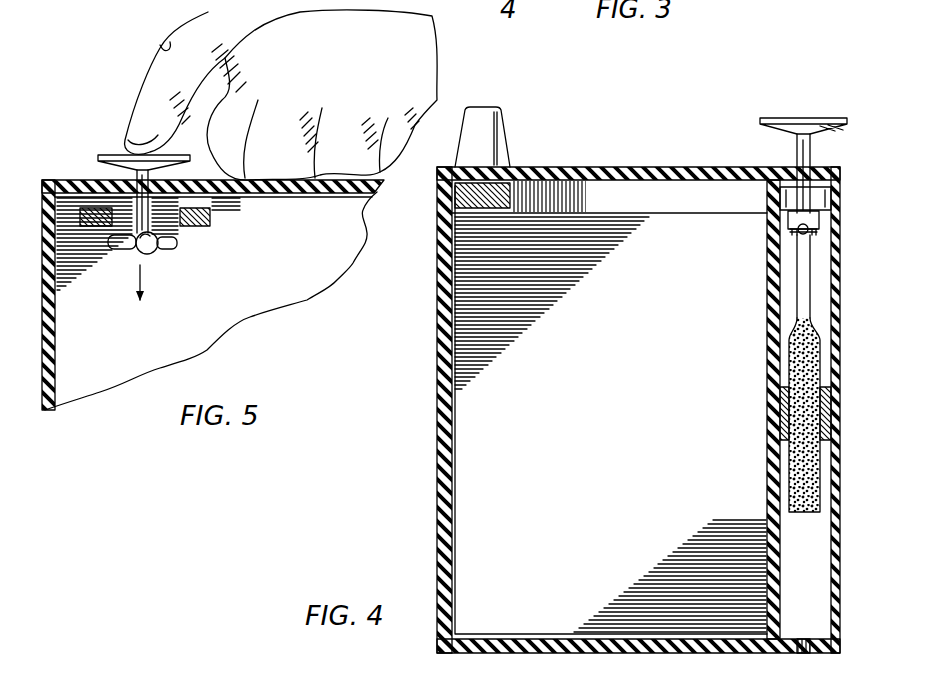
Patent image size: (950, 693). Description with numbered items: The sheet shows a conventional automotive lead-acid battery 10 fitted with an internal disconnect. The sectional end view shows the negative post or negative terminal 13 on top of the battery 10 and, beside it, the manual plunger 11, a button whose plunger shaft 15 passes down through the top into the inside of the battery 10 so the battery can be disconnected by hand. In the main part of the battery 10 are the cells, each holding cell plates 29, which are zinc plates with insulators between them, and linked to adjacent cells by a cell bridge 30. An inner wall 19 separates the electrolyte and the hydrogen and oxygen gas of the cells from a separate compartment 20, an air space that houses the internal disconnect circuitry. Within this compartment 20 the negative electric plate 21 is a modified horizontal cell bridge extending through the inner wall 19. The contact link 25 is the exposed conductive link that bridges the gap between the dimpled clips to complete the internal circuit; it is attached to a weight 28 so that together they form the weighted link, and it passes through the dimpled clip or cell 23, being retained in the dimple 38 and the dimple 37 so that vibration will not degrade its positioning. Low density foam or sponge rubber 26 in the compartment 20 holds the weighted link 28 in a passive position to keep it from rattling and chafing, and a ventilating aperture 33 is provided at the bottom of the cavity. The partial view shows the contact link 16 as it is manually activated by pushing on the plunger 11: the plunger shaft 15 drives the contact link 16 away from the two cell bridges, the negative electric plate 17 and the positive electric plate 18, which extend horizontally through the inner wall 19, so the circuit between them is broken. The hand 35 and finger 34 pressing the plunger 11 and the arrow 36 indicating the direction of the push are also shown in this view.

In FIG. 4, the battery 10 is at (816, 82).
In FIG. 4, the manual plunger 11 is at (766, 116).
In FIG. 5, the manual plunger 11 is at (108, 148).
In FIG. 4, the negative terminal 13 is at (500, 118).
In FIG. 4, the plunger shaft 15 is at (800, 150).
In FIG. 5, the plunger shaft 15 is at (128, 165).
In FIG. 5, the contact link 16 is at (172, 252).
In FIG. 5, the negative electric plate 17 is at (90, 226).
In FIG. 5, the positive electric plate 18 is at (210, 228).
In FIG. 4, the inner wall 19 is at (762, 505).
In FIG. 4, the compartment 20 is at (800, 546).
In FIG. 5, the compartment 20 is at (265, 295).
In FIG. 4, the negative electric plate 21 is at (830, 195).
In FIG. 4, the cell 23 is at (806, 228).
In FIG. 4, the contact link 25 is at (812, 240).
In FIG. 4, the low density foam or sponge rubber 26 is at (778, 418).
In FIG. 4, the weight 28 is at (820, 345).
In FIG. 4, the cell plates 29 is at (640, 369).
In FIG. 4, the cell bridge 30 is at (512, 168).
In FIG. 4, the ventilating aperture 33 is at (808, 636).
In FIG. 5, the finger 34 is at (222, 168).
In FIG. 5, the hand 35 is at (208, 45).
In FIG. 5, the direction of force 36 is at (128, 288).
In FIG. 5, the dimple 37 is at (112, 212).
In FIG. 4, the dimple 38 is at (782, 232).